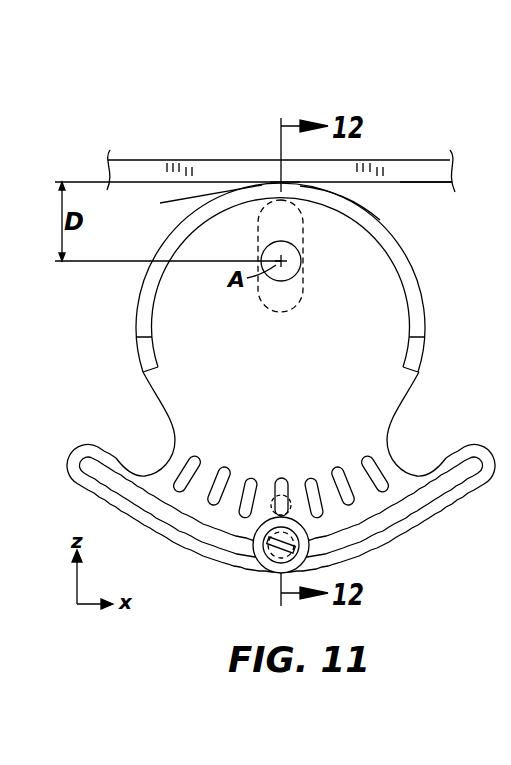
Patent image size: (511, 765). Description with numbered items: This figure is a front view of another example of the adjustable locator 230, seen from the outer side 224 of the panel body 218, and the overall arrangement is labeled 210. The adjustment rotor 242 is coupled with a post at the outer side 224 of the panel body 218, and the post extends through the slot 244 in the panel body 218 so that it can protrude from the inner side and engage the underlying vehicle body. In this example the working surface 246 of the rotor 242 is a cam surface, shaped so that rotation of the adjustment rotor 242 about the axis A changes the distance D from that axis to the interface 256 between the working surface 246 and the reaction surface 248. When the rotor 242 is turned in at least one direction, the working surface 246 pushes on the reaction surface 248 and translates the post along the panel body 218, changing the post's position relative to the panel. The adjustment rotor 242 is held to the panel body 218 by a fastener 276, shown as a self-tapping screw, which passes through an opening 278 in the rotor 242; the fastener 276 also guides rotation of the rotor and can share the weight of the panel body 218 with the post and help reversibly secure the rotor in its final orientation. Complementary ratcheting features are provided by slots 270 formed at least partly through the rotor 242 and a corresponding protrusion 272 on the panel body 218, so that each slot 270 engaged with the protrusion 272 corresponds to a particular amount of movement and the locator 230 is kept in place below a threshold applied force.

The spectacles/eyewear assembly 210 is at (256, 90).
The panel body 218 is at (123, 158).
The outer side 224 is at (150, 168).
The adjustable locator 230 is at (265, 176).
The adjustment rotor 242 is at (372, 278).
The slot 244 is at (274, 303).
The working surface 246 is at (378, 217).
The reaction surface 248 is at (409, 184).
The interface 256 is at (192, 201).
The slots 270 is at (257, 477).
The protrusion 272 is at (281, 478).
The fastener 276 is at (268, 569).
The opening 278 is at (430, 505).